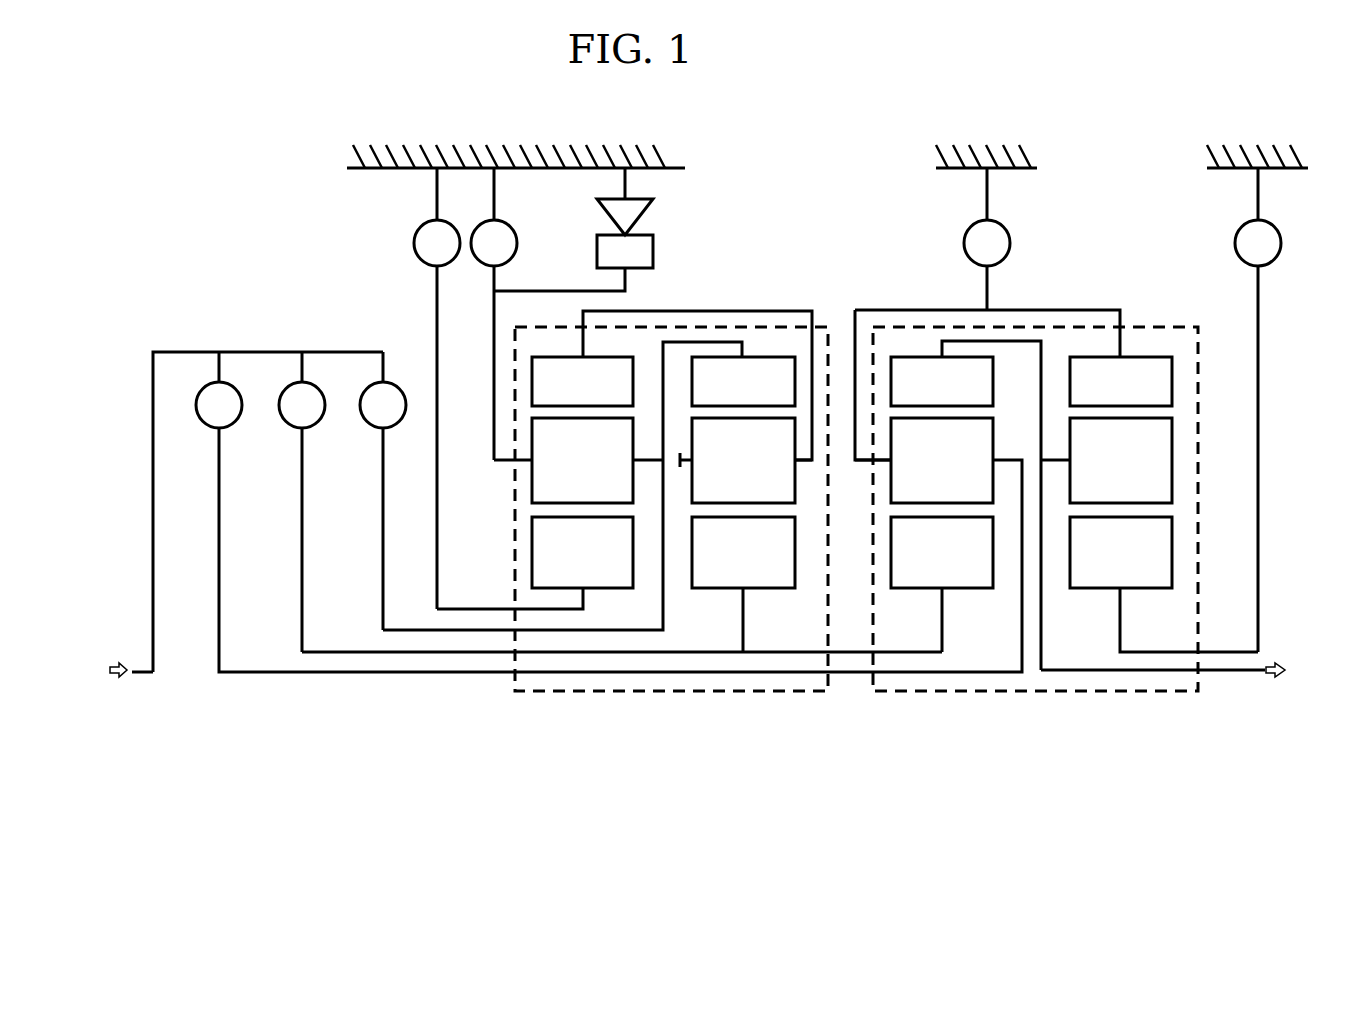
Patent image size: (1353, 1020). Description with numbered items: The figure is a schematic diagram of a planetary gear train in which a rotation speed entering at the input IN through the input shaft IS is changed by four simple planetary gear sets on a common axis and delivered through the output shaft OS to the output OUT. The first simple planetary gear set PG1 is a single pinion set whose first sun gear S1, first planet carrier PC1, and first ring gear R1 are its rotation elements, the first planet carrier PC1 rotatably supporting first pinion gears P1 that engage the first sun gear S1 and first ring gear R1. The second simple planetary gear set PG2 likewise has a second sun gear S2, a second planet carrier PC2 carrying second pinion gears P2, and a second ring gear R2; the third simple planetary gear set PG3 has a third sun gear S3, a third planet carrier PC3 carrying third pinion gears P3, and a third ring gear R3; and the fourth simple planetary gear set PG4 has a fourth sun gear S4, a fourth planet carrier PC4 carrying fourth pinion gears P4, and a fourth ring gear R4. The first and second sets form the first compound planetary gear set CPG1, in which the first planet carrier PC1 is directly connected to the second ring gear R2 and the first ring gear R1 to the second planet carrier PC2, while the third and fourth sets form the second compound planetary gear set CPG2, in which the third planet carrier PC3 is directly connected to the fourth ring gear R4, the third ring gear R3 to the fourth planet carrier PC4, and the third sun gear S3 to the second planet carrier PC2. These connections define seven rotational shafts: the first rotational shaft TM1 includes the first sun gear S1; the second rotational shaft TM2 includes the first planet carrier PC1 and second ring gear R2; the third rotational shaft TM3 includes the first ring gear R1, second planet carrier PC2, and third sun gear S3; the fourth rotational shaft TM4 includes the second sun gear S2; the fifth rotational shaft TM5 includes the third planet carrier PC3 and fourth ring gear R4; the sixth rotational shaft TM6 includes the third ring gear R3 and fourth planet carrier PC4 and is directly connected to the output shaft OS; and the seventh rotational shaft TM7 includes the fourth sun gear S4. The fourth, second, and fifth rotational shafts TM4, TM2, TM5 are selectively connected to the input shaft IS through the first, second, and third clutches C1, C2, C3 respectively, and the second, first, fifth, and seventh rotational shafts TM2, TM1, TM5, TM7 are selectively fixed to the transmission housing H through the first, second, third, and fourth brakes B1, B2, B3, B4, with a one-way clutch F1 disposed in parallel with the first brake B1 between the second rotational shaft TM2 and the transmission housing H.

The transmission housing H is at (630, 143).
The first brake B1 is at (494, 314).
The second brake B2 is at (437, 388).
The third brake B3 is at (987, 239).
The fourth brake B4 is at (1258, 410).
The one-way clutch F1 is at (573, 229).
The first clutch C1 is at (302, 502).
The second clutch C2 is at (383, 491).
The third clutch C3 is at (609, 512).
The input IN is at (115, 670).
The input shaft IS is at (143, 675).
The output OUT is at (1310, 672).
The output shaft OS is at (1142, 673).
The first rotational shaft TM1 is at (466, 609).
The second rotational shaft TM2 is at (597, 628).
The third rotational shaft TM3 is at (756, 309).
The fourth rotational shaft TM4 is at (668, 648).
The fifth rotational shaft TM5 is at (880, 308).
The sixth rotational shaft TM6 is at (1035, 340).
The seventh rotational shaft TM7 is at (1227, 650).
The first planet carrier PC1 is at (497, 463).
The second planet carrier PC2 is at (803, 468).
The third planet carrier PC3 is at (862, 463).
The fourth planet carrier PC4 is at (1052, 455).
The first simple planetary gear set PG1 is at (582, 565).
The second simple planetary gear set PG2 is at (743, 568).
The third simple planetary gear set PG3 is at (933, 566).
The fourth simple planetary gear set PG4 is at (1117, 566).
The first compound planetary gear set CPG1 is at (671, 575).
The second compound planetary gear set CPG2 is at (1035, 575).
The first ring gear R1 is at (582, 381).
The second ring gear R2 is at (743, 381).
The third ring gear R3 is at (942, 381).
The fourth ring gear R4 is at (1121, 381).
The first pinion gears P1 is at (582, 460).
The second pinion gears P2 is at (743, 460).
The third pinion gears P3 is at (942, 460).
The fourth pinion gears P4 is at (1121, 460).
The first sun gear S1 is at (594, 590).
The second sun gear S2 is at (758, 592).
The third sun gear S3 is at (942, 552).
The fourth sun gear S4 is at (1121, 552).